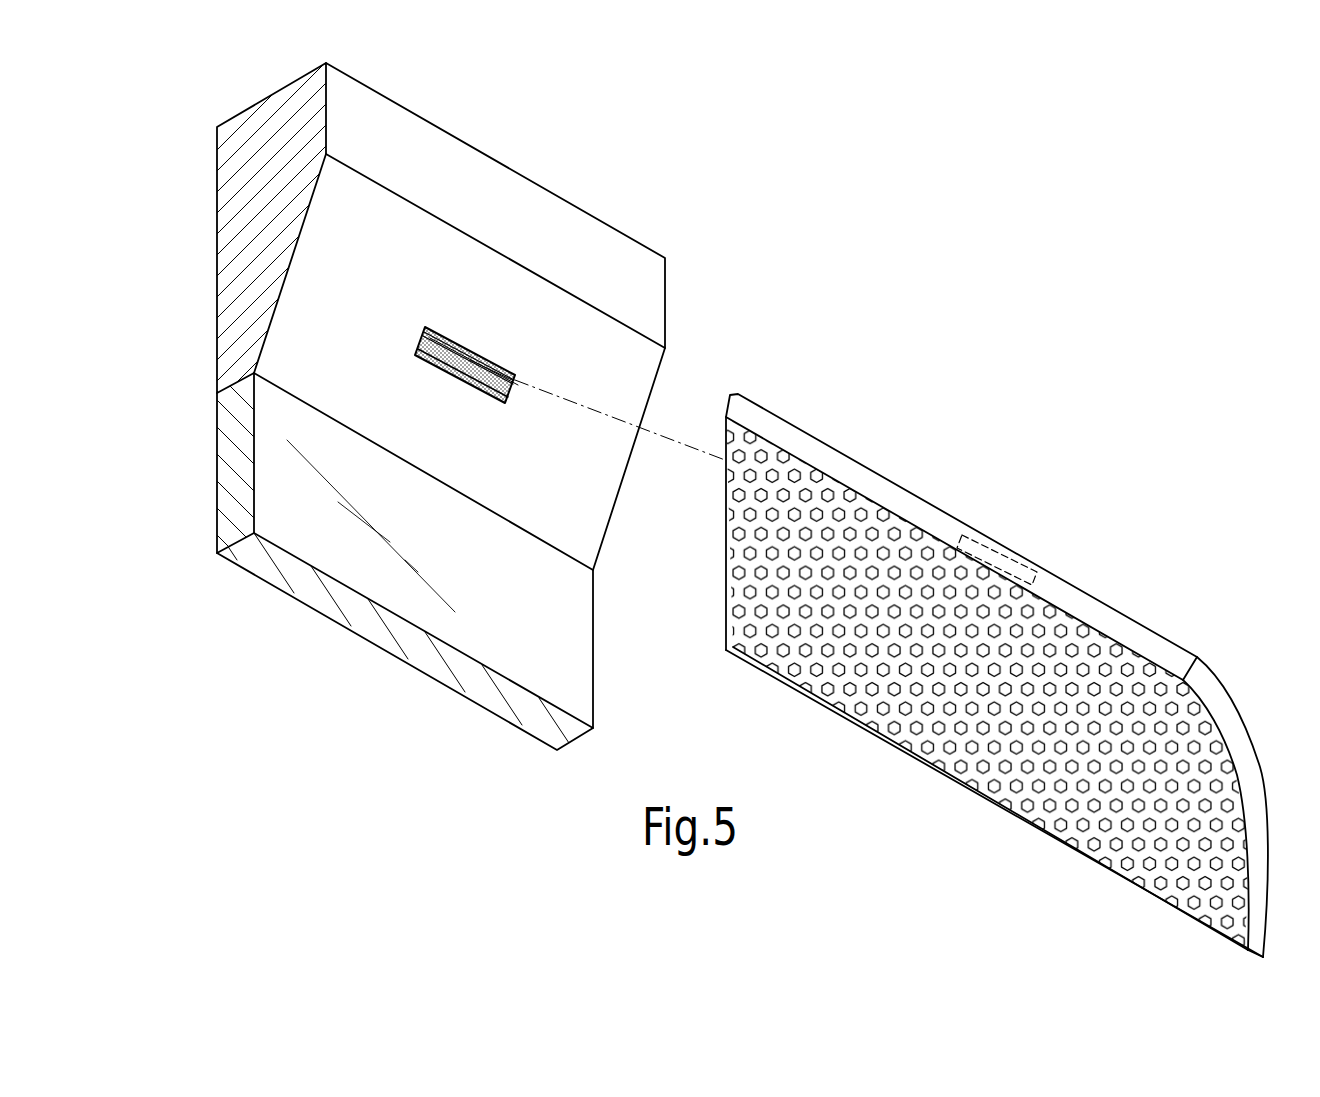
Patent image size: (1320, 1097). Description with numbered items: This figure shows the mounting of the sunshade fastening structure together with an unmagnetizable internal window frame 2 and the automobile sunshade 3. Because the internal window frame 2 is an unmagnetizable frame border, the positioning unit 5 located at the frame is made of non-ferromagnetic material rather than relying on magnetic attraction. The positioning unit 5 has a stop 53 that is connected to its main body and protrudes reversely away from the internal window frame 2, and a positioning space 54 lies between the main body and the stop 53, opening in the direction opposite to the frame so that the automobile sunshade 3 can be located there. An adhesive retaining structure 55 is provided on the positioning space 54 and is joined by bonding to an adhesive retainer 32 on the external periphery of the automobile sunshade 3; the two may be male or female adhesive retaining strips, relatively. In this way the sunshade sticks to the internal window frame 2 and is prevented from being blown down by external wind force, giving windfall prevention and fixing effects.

The internal window frame 2 is at (212, 146).
The automobile sunshade 3 is at (1206, 653).
The adhesive retainer 32 is at (1002, 560).
The positioning unit 5 is at (444, 312).
The stop 53 is at (515, 373).
The positioning space 54 is at (425, 330).
The adhesive retaining structure 55 is at (465, 348).